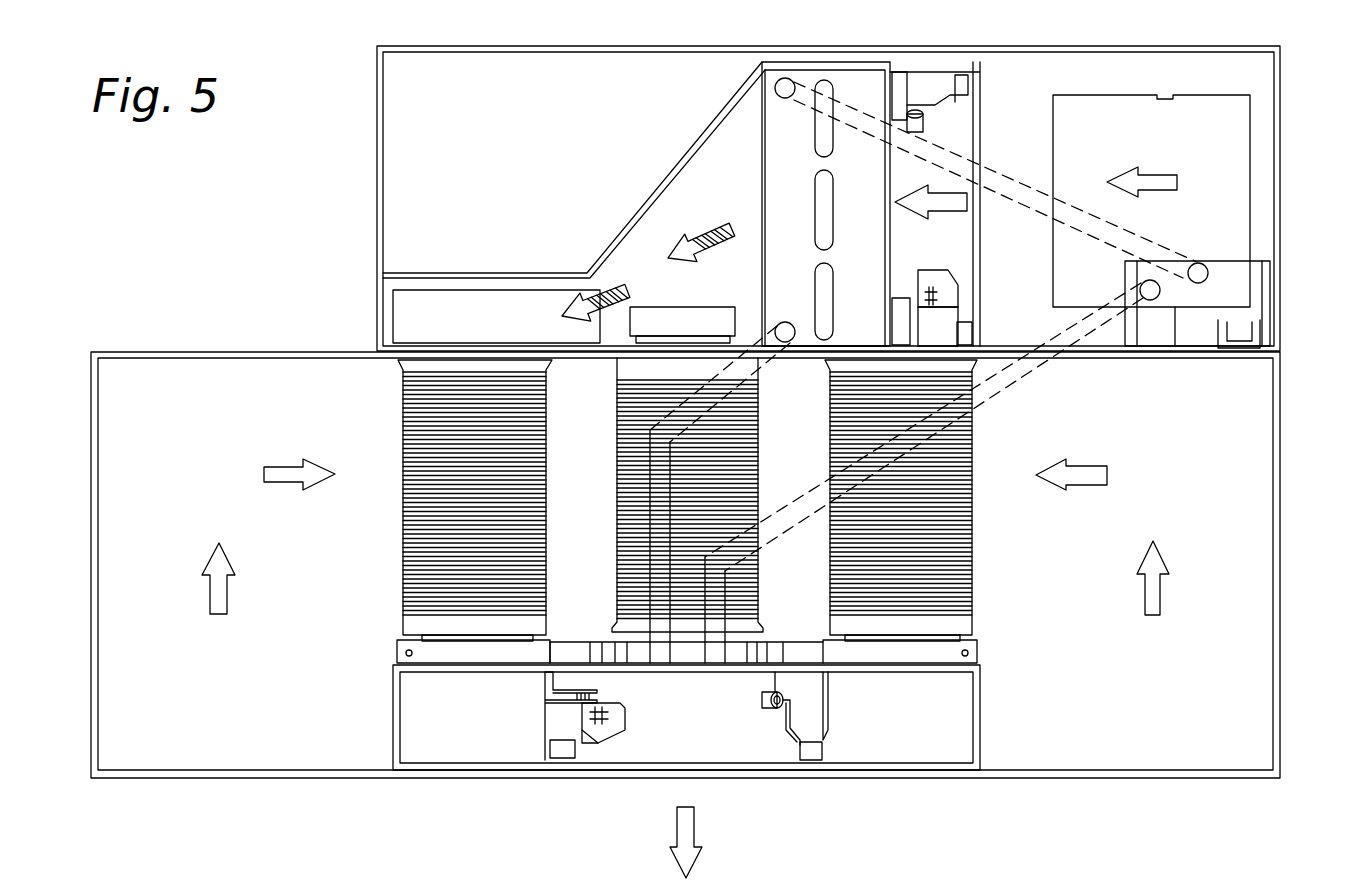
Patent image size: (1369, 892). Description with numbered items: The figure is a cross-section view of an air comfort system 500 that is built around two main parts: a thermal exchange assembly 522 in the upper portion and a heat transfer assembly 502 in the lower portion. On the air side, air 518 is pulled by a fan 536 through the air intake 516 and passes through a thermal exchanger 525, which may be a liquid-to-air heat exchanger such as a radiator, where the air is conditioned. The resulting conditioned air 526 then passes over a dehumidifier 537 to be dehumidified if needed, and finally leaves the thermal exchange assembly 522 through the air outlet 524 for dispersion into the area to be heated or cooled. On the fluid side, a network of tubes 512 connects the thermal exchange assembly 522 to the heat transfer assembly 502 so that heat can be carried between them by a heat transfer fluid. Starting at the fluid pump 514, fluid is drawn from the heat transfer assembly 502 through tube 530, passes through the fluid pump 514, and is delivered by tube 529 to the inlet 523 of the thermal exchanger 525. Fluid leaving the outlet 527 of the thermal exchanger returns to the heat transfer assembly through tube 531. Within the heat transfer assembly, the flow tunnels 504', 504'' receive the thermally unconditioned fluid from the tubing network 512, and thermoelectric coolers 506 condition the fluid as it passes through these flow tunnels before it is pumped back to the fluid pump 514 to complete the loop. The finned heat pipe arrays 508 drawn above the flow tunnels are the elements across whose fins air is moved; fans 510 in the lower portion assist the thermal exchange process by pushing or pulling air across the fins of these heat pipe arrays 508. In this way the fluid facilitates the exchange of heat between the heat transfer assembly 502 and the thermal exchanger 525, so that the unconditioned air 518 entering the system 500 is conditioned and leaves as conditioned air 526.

The air comfort system 500 is at (318, 815).
The heat transfer assembly 502 is at (341, 409).
The flow tunnel 504' is at (939, 649).
The flow tunnel 504'' is at (571, 649).
The thermoelectric coolers 506 is at (423, 637).
The heat sink 508 is at (403, 524).
The fans 510 is at (615, 718).
The network of tubes 512 is at (1118, 400).
The fluid pump 514 is at (1240, 339).
The air intake 516 is at (1163, 94).
The air 518 is at (1160, 178).
The thermal exchange assembly 522 is at (760, 32).
The inlet 523 is at (785, 99).
The air outlet 524 is at (490, 289).
The thermal exchanger 525 is at (763, 178).
The conditioned air 526 is at (620, 284).
The outlet 527 is at (785, 321).
The tube 529 is at (1000, 183).
The tube 530 is at (1001, 390).
The tube 531 is at (747, 369).
The fan 536 is at (938, 327).
The dehumidifier 537 is at (665, 306).